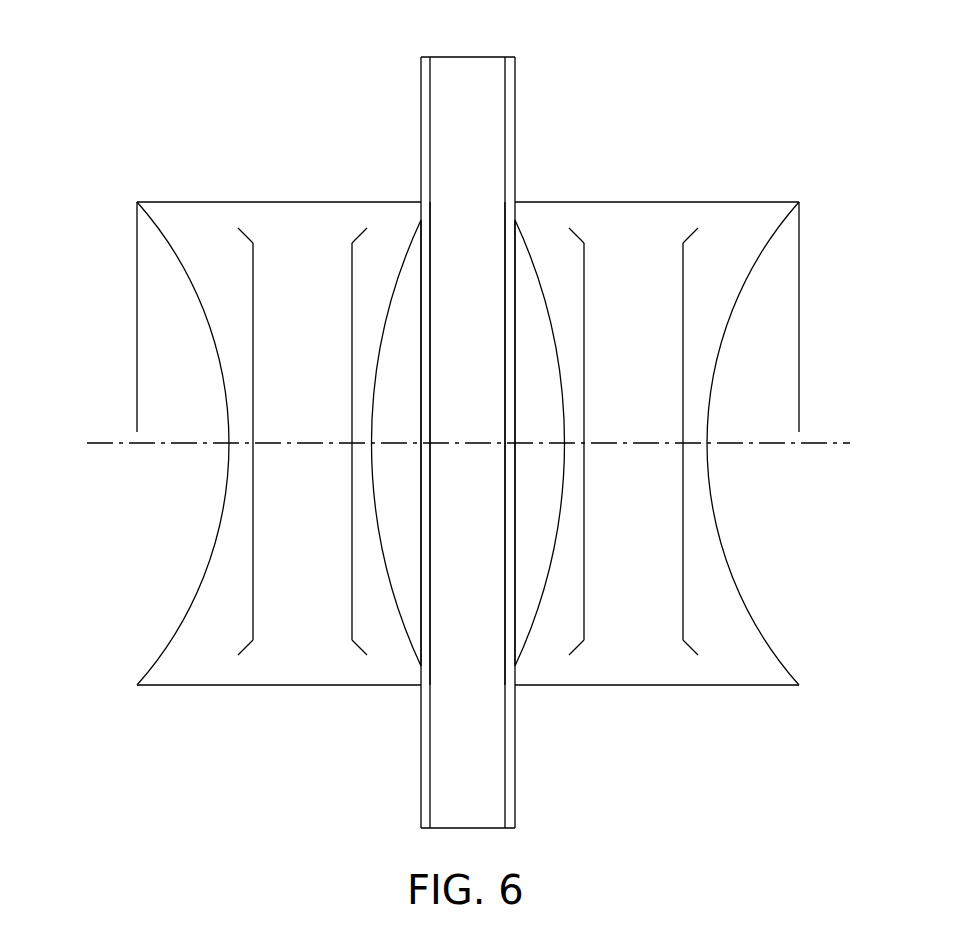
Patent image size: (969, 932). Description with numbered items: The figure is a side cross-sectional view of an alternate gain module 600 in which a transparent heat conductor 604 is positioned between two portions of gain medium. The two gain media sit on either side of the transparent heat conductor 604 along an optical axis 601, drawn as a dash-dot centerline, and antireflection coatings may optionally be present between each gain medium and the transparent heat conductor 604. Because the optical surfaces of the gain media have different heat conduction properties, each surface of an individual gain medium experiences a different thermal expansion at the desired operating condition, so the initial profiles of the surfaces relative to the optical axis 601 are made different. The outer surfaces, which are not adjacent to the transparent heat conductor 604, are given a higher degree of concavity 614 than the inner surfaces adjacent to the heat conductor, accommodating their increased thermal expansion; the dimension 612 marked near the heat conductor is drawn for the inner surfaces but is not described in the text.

The gain module 600 is at (278, 117).
The optical axis 601 is at (102, 442).
The transparent heat conductor 604 is at (422, 787).
The center thickness 612 is at (446, 427).
The degree of concavity 614 is at (229, 427).